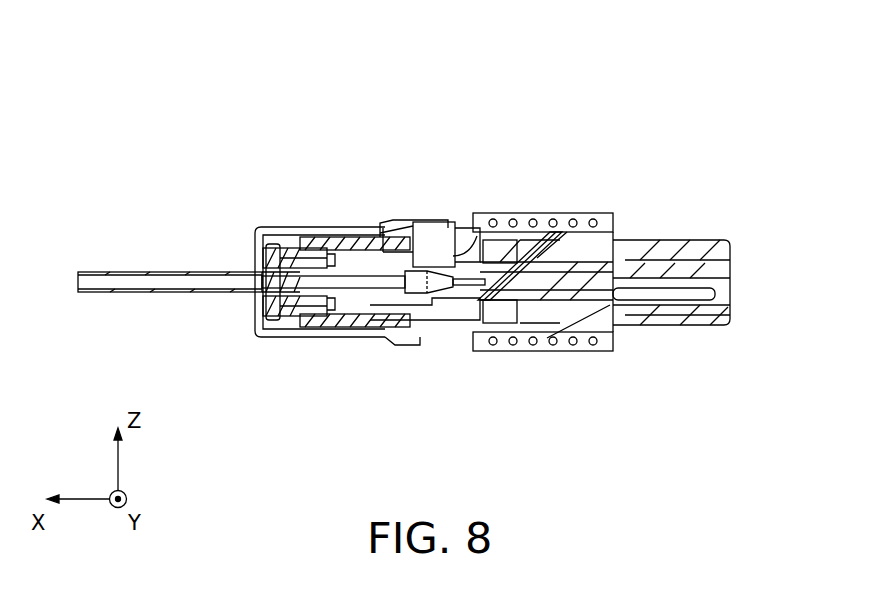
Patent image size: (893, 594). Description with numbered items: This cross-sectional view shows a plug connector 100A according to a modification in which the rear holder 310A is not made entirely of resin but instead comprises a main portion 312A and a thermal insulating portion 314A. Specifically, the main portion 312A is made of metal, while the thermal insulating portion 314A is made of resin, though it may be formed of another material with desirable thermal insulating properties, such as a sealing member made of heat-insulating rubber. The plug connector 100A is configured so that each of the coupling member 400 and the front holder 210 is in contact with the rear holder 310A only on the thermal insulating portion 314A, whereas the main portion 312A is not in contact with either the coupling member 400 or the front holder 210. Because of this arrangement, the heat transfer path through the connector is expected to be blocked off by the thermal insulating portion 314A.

The plug connector 100A is at (528, 64).
The rear holder 310A is at (436, 150).
The main portion 312A is at (332, 243).
The thermal insulating portion 314A is at (407, 233).
The coupling member 400 is at (445, 220).
The front holder 210 is at (537, 243).